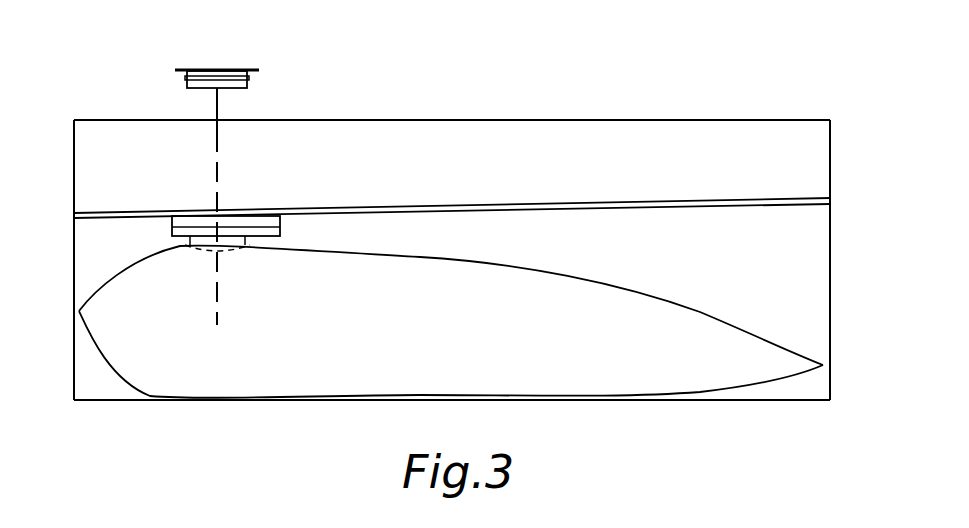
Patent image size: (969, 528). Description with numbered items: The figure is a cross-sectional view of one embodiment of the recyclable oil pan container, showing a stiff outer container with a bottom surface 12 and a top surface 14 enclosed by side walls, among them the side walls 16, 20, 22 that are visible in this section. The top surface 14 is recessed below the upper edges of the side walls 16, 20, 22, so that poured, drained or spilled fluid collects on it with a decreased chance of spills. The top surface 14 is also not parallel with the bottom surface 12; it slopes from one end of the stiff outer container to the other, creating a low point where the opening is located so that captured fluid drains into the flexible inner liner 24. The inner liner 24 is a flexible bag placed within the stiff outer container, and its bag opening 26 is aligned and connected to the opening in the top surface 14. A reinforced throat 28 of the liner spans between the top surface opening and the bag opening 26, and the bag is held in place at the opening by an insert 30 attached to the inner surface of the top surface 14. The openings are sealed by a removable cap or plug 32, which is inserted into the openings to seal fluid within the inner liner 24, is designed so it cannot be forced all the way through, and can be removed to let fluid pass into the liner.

The bottom surface 12 is at (770, 400).
The top surface 14 is at (515, 205).
The side wall 16 is at (698, 128).
The side wall 20 is at (74, 165).
The side wall 22 is at (832, 232).
The flexible inner liner 24 is at (745, 340).
The bag opening 26 is at (232, 255).
The reinforced throat 28 is at (185, 238).
The insert 30 is at (280, 220).
The cap or plug 32 is at (185, 72).